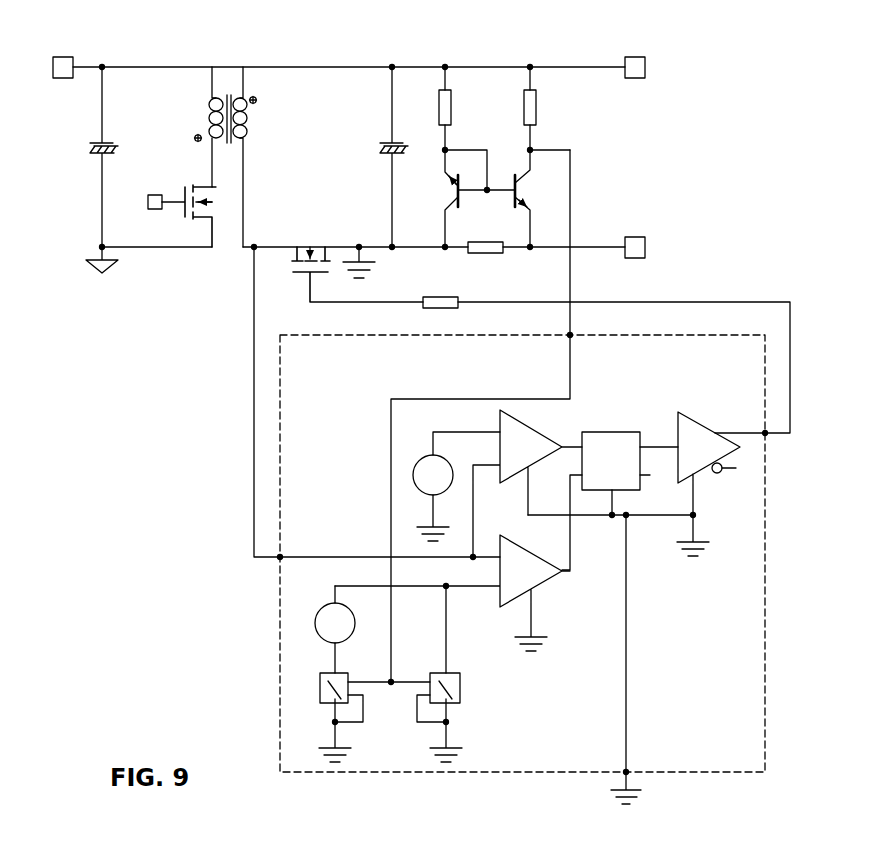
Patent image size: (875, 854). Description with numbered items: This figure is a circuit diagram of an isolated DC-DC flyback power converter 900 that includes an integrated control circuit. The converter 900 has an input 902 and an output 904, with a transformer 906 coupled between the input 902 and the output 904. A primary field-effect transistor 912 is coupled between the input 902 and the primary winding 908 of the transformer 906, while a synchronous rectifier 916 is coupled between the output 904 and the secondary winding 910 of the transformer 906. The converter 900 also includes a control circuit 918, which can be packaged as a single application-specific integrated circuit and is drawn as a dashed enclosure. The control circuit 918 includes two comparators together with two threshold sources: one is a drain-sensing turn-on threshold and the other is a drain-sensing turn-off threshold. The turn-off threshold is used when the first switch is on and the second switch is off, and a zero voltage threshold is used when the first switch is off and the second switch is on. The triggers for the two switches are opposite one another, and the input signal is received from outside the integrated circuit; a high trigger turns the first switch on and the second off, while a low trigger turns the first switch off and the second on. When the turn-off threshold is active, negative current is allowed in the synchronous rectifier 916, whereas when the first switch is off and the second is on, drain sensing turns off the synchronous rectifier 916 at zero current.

The isolated DC-DC flyback power converter 900 is at (780, 58).
The input 902 is at (63, 57).
The output 904 is at (636, 57).
The transformer 906 is at (205, 103).
The primary winding 908 is at (228, 77).
The secondary winding 910 is at (256, 117).
The primary field-effect transistor 912 is at (207, 175).
The synchronous rectifier 916 is at (305, 238).
The control circuit 918 is at (280, 650).